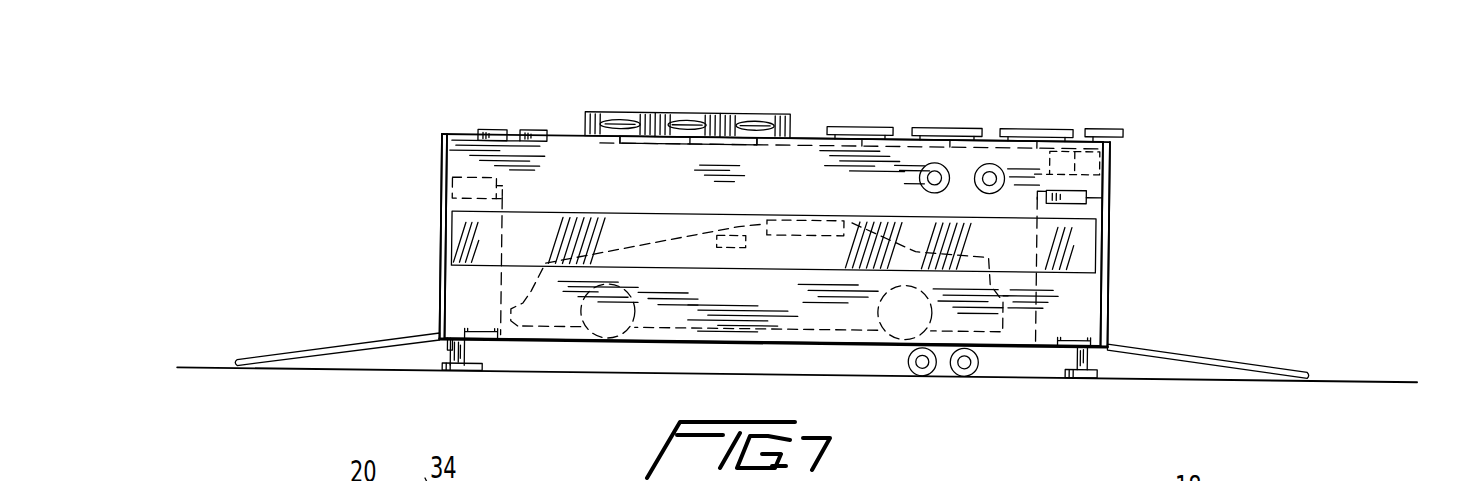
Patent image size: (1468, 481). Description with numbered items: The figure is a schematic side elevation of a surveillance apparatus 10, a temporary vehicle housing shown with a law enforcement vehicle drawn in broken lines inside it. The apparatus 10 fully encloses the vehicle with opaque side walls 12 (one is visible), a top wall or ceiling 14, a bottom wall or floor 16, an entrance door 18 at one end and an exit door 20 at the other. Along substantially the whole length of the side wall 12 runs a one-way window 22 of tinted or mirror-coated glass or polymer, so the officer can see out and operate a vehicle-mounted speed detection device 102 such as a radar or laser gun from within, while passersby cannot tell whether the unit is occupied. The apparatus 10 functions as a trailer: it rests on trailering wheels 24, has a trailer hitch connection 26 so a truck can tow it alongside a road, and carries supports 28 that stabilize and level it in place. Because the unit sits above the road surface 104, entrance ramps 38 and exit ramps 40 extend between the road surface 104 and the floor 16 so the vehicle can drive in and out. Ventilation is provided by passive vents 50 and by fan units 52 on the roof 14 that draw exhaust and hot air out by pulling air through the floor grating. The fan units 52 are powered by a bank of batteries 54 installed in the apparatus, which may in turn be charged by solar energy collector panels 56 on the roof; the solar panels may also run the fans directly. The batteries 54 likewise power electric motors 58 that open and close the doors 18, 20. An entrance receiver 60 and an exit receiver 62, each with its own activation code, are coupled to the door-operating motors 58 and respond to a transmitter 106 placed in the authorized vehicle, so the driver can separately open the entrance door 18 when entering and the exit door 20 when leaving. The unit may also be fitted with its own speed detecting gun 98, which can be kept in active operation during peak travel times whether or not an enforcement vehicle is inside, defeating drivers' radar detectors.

The surveillance apparatus 10 is at (435, 105).
The side wall 12 is at (458, 165).
The top wall or ceiling 14 is at (810, 138).
The bottom wall or floor 16 is at (555, 341).
The entrance door 18 is at (1112, 240).
The exit door 20 is at (440, 212).
The one-way window 22 is at (533, 230).
The trailering wheels 24 is at (958, 376).
The trailer hitch connection 26 is at (443, 345).
The supports 28 is at (478, 353).
The entrance ramps 38 is at (1228, 360).
The exit ramps 40 is at (285, 350).
The passive vents 50 is at (522, 130).
The fan units 52 is at (640, 115).
The bank of batteries 54 is at (1113, 163).
The solar energy collector panels 56 is at (915, 127).
The electric motors 58 is at (487, 327).
The entrance receiver 60 is at (1113, 193).
The exit receiver 62 is at (483, 177).
The speed detecting gun 98 is at (1123, 129).
The speed detection device 102 is at (815, 220).
The road surface 104 is at (185, 365).
The transmitter 106 is at (723, 232).